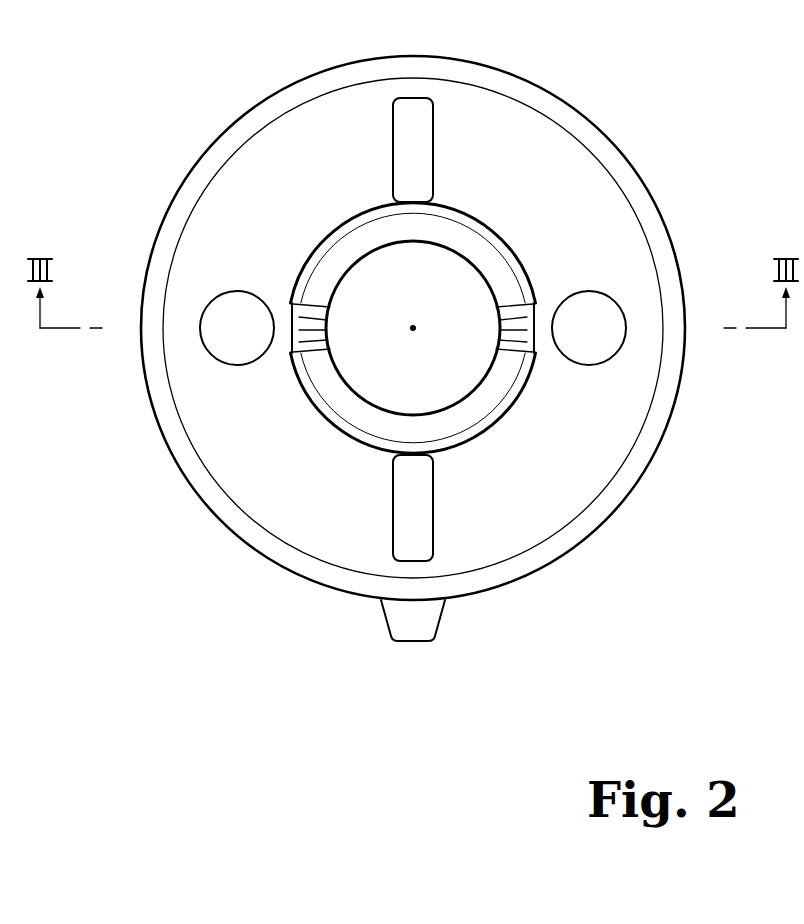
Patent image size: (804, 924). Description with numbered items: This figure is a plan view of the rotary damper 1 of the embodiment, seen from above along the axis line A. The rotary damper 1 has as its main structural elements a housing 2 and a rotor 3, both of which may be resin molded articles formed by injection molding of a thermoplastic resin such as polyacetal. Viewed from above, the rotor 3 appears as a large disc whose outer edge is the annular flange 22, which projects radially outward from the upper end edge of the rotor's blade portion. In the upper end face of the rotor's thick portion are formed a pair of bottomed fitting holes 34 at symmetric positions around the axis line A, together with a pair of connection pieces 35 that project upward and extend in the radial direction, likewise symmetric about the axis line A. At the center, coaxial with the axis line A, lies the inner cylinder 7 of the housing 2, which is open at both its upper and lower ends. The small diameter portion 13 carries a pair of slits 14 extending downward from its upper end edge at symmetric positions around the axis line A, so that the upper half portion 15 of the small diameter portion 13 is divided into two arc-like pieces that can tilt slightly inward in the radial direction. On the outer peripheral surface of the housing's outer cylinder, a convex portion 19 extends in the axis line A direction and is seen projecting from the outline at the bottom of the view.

The rotary damper 1 is at (611, 61).
The housing 2 is at (411, 246).
The rotor 3 is at (222, 135).
The inner cylinder 7 is at (353, 406).
The small diameter portion 13 is at (330, 288).
The slits 14 is at (507, 328).
The upper half portion 15 is at (488, 272).
The convex portion 19 is at (417, 636).
The flange 22 is at (595, 517).
The fitting holes 34 is at (605, 308).
The connection pieces 35 is at (427, 125).
The axis line A is at (413, 324).